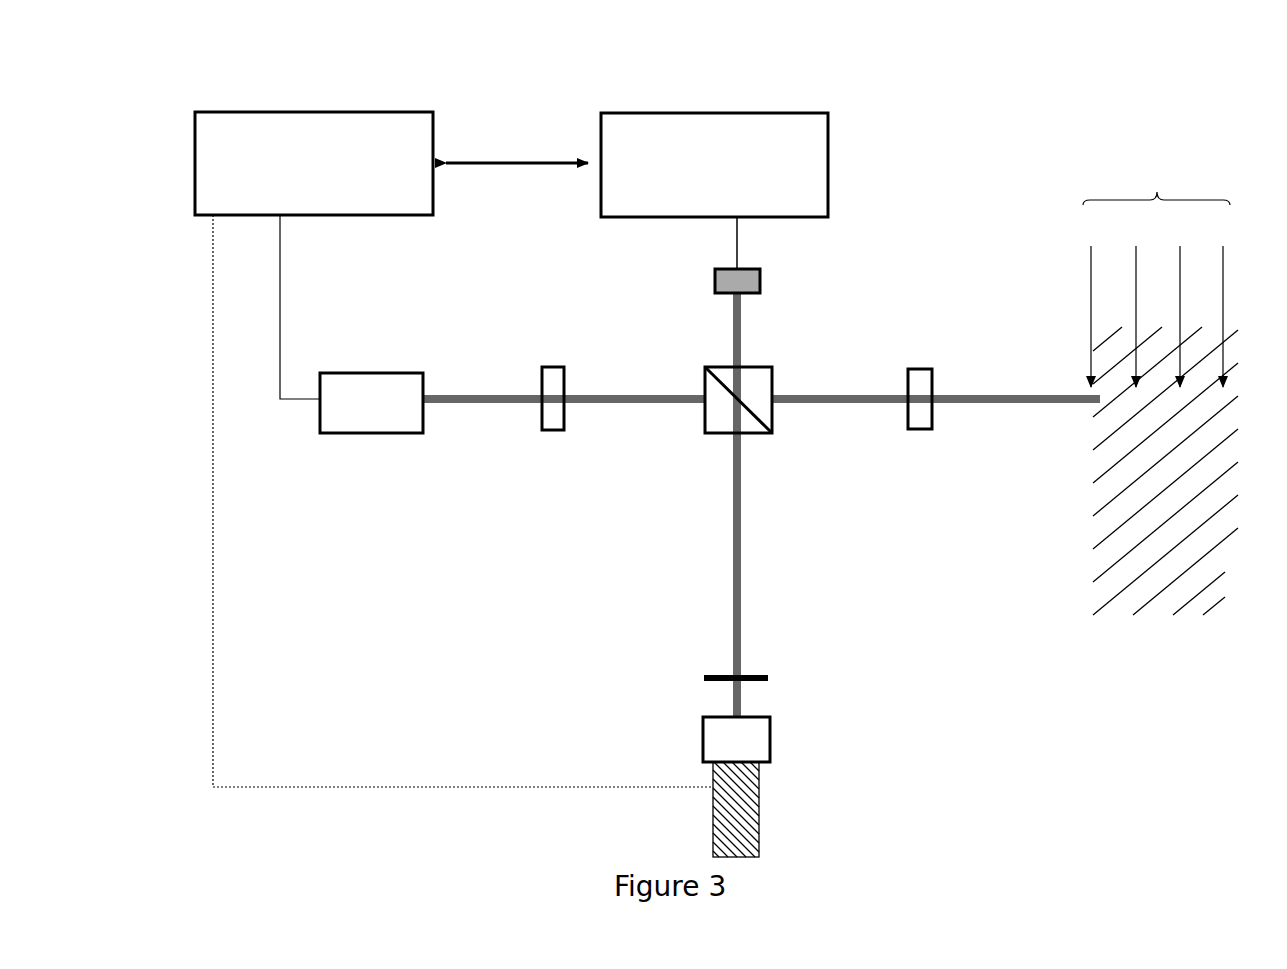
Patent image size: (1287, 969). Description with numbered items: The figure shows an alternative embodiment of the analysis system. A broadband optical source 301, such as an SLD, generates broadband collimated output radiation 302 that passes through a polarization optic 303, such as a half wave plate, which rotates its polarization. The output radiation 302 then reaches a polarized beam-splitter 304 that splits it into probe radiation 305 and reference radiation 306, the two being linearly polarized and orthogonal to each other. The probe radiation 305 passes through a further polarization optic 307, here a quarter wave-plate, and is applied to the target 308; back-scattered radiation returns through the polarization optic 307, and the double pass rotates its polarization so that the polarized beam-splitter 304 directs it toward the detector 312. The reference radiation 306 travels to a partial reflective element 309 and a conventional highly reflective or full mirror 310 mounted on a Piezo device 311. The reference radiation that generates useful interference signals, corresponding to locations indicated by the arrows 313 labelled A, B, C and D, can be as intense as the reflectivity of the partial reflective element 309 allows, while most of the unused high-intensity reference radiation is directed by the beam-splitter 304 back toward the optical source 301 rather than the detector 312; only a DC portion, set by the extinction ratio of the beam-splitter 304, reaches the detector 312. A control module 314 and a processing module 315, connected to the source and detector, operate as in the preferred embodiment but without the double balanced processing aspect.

The broadband optical source 301 is at (355, 435).
The output radiation 302 is at (512, 388).
The polarization optic 303 is at (548, 435).
The polarized beam-splitter 304 is at (717, 363).
The probe radiation 305 is at (848, 387).
The reference radiation 306 is at (723, 533).
The polarization optic 307 is at (932, 432).
The target 308 is at (1162, 620).
The partial reflective element 309 is at (777, 679).
The mirror 310 is at (779, 726).
The Piezo device 311 is at (763, 803).
The detector 312 is at (707, 280).
The arrows 313 is at (1153, 190).
The control module 314 is at (442, 195).
The processing module 315 is at (833, 168).